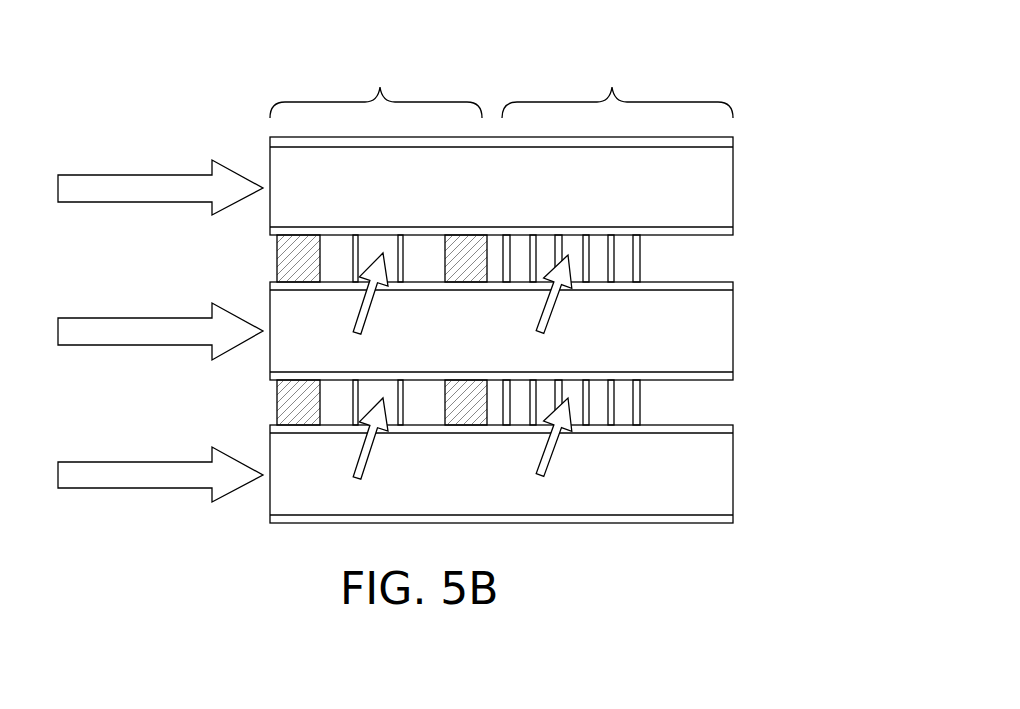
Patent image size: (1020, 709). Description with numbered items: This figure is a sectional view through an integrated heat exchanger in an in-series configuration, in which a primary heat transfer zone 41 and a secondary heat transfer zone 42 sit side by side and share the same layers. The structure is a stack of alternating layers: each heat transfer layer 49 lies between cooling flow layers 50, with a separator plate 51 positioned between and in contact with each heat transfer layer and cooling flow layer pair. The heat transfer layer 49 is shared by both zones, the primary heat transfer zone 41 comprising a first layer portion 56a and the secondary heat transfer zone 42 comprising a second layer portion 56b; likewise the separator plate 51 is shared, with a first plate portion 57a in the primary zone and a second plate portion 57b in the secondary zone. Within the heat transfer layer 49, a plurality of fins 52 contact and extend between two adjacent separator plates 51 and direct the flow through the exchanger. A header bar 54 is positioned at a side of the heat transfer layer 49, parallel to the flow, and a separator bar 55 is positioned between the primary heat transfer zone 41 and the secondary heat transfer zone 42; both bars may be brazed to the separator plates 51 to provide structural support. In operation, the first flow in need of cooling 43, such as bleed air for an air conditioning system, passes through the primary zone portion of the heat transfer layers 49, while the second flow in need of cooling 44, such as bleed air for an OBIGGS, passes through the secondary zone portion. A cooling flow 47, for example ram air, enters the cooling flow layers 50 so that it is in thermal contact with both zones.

The primary heat transfer zone 41 is at (617, 86).
The secondary heat transfer zone 42 is at (376, 86).
The first flow in need of cooling 43 is at (547, 328).
The second flow in need of cooling 44 is at (356, 322).
The cooling flow 47 is at (122, 175).
The heat transfer layer 49 is at (738, 254).
The cooling flow layer 50 is at (733, 192).
The separator plate 51 is at (733, 231).
The fin 52 is at (353, 240).
The header bar 54 is at (283, 262).
The separator bar 55 is at (462, 240).
The first layer portion 56a is at (663, 252).
The second layer portion 56b is at (330, 255).
The first plate portion 57a is at (674, 430).
The second plate portion 57b is at (436, 433).